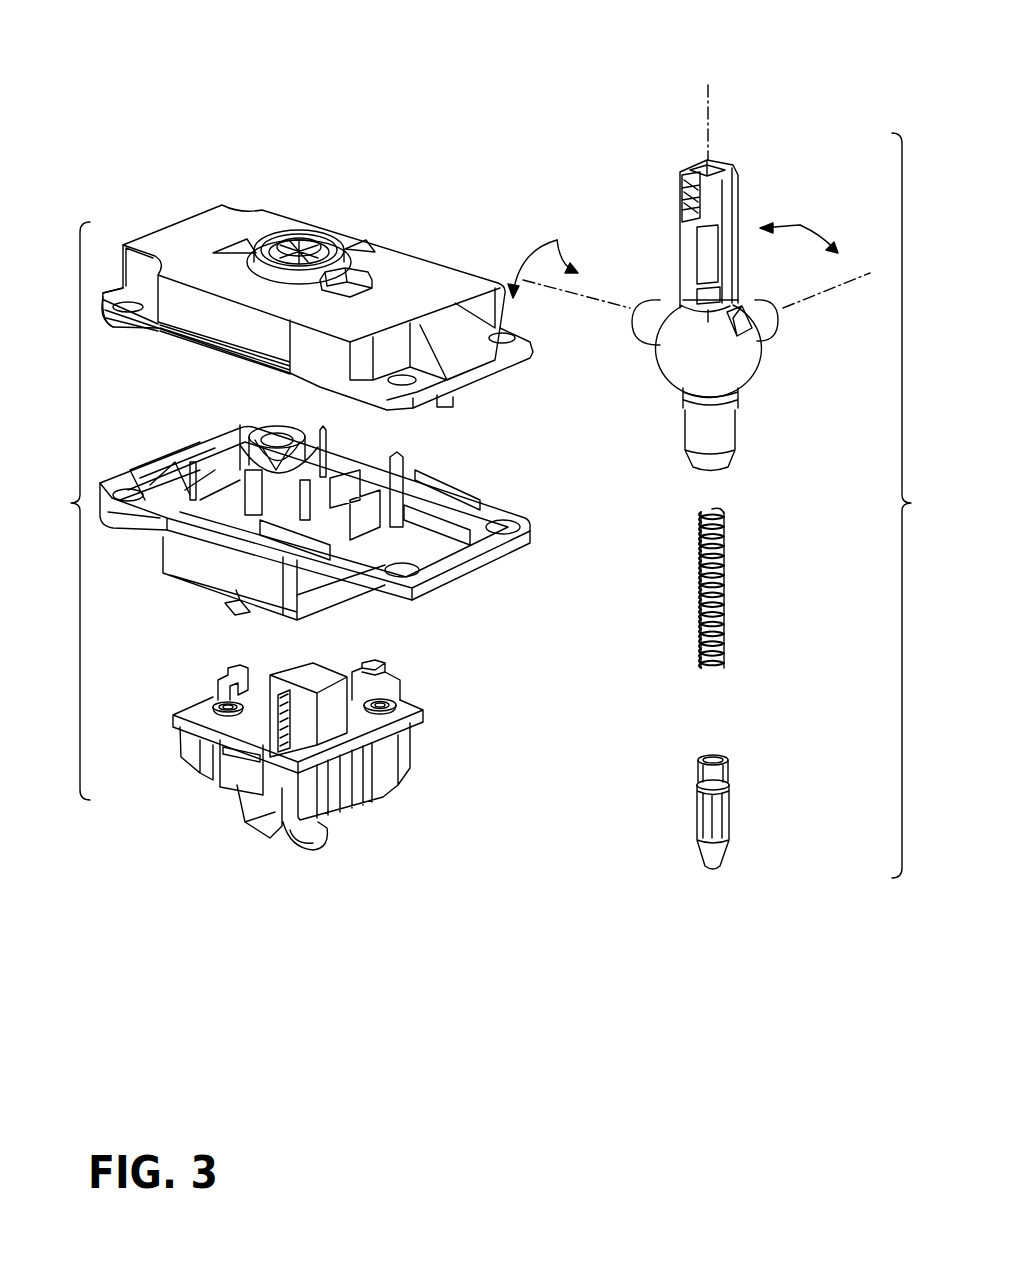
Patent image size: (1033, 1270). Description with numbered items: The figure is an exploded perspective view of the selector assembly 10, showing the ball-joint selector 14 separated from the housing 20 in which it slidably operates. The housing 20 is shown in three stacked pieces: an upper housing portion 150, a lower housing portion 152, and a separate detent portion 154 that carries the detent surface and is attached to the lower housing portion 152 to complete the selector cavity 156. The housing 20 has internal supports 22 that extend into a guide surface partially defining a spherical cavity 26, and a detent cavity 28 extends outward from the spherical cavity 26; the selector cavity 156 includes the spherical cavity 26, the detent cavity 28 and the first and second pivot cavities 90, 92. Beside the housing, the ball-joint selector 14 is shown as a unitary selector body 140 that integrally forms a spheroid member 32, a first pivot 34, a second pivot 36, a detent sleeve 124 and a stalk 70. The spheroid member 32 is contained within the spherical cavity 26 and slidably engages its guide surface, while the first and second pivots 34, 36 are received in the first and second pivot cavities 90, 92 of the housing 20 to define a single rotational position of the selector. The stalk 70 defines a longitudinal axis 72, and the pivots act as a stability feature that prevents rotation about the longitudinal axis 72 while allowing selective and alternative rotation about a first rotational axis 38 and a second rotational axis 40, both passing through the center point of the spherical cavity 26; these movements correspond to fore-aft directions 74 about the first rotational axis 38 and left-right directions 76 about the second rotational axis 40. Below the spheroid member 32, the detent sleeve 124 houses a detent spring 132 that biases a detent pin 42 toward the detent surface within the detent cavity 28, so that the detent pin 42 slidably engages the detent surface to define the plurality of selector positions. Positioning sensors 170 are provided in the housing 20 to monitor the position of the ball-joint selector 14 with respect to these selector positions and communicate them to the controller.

The selector assembly 10 is at (450, 90).
The ball-joint selector 14 is at (919, 505).
The housing 20 is at (59, 511).
The internal supports 22 is at (323, 452).
The spherical cavity 26 is at (230, 435).
The detent cavity 28 is at (283, 697).
The spheroid member 32 is at (685, 365).
The first pivot 34 is at (772, 322).
The second pivot 36 is at (648, 297).
The first rotational axis 38 is at (807, 302).
The second rotational axis 40 is at (603, 303).
The detent pin 42 is at (710, 850).
The stalk 70 is at (682, 243).
The longitudinal axis 72 is at (707, 110).
The fore-aft directions 74 is at (800, 225).
The left-right directions 76 is at (560, 237).
The first pivot cavity 90 is at (368, 242).
The second pivot cavity 92 is at (238, 247).
The detent sleeve 124 is at (712, 440).
The detent spring 132 is at (702, 613).
The selector body 140 is at (760, 372).
The upper housing portion 150 is at (180, 232).
The lower housing portion 152 is at (299, 605).
The detent portion 154 is at (260, 822).
The selector cavity 156 is at (300, 253).
The positioning sensors 170 is at (427, 480).